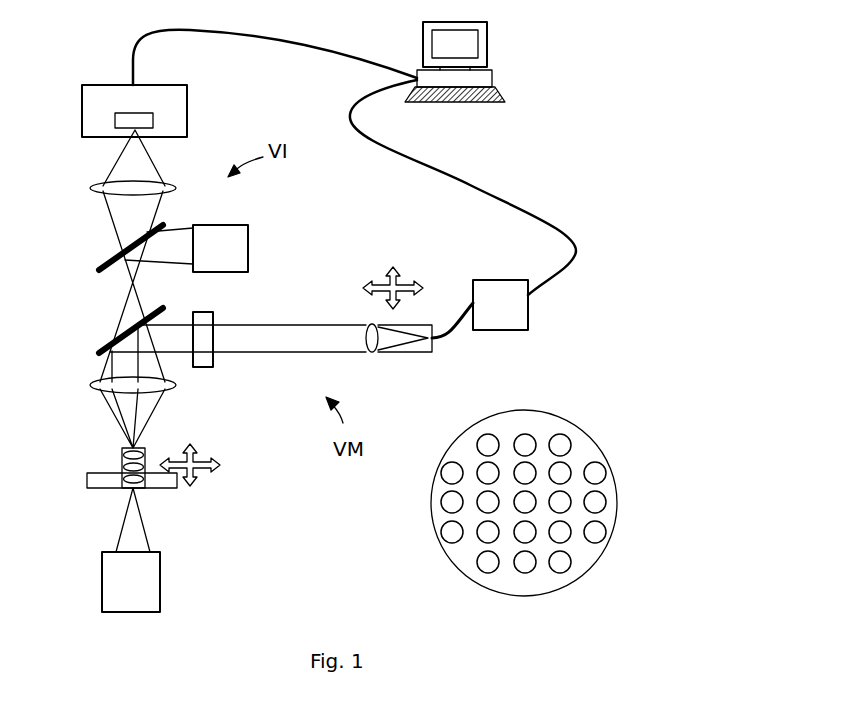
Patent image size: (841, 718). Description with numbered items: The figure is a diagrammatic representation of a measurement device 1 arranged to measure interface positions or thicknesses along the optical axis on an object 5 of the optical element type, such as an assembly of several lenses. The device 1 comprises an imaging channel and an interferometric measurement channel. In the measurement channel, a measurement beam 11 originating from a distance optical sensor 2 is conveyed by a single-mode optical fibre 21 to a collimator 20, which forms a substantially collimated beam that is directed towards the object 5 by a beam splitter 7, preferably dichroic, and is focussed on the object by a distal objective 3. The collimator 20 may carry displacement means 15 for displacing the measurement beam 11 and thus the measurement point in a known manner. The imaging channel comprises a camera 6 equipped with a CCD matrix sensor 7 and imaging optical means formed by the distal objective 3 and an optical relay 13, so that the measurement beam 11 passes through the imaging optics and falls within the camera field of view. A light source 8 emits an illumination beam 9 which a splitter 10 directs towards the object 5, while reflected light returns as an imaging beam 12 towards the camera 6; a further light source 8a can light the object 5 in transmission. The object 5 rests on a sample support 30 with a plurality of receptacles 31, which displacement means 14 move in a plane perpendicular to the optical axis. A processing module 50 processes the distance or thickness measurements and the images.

The measurement device 1 is at (653, 113).
The distance optical sensor 2 is at (494, 298).
The distal objective 3 is at (108, 383).
The object 5 is at (145, 488).
The camera 6 is at (90, 108).
The beam splitter 7 is at (148, 122).
The light source 8 is at (219, 228).
The light source 8a is at (160, 592).
The illumination beam 9 is at (174, 250).
The splitter 10 is at (116, 249).
The measurement beam 11 is at (301, 353).
The imaging beam 12 is at (133, 213).
The optical relay 13 is at (95, 188).
The displacement means 14 is at (198, 453).
The displacement means 15 is at (397, 274).
The collimator 20 is at (366, 337).
The single-mode optical fibre 21 is at (442, 340).
The sample support 30 is at (100, 480).
The receptacles 31 is at (600, 474).
The processing module 50 is at (487, 45).